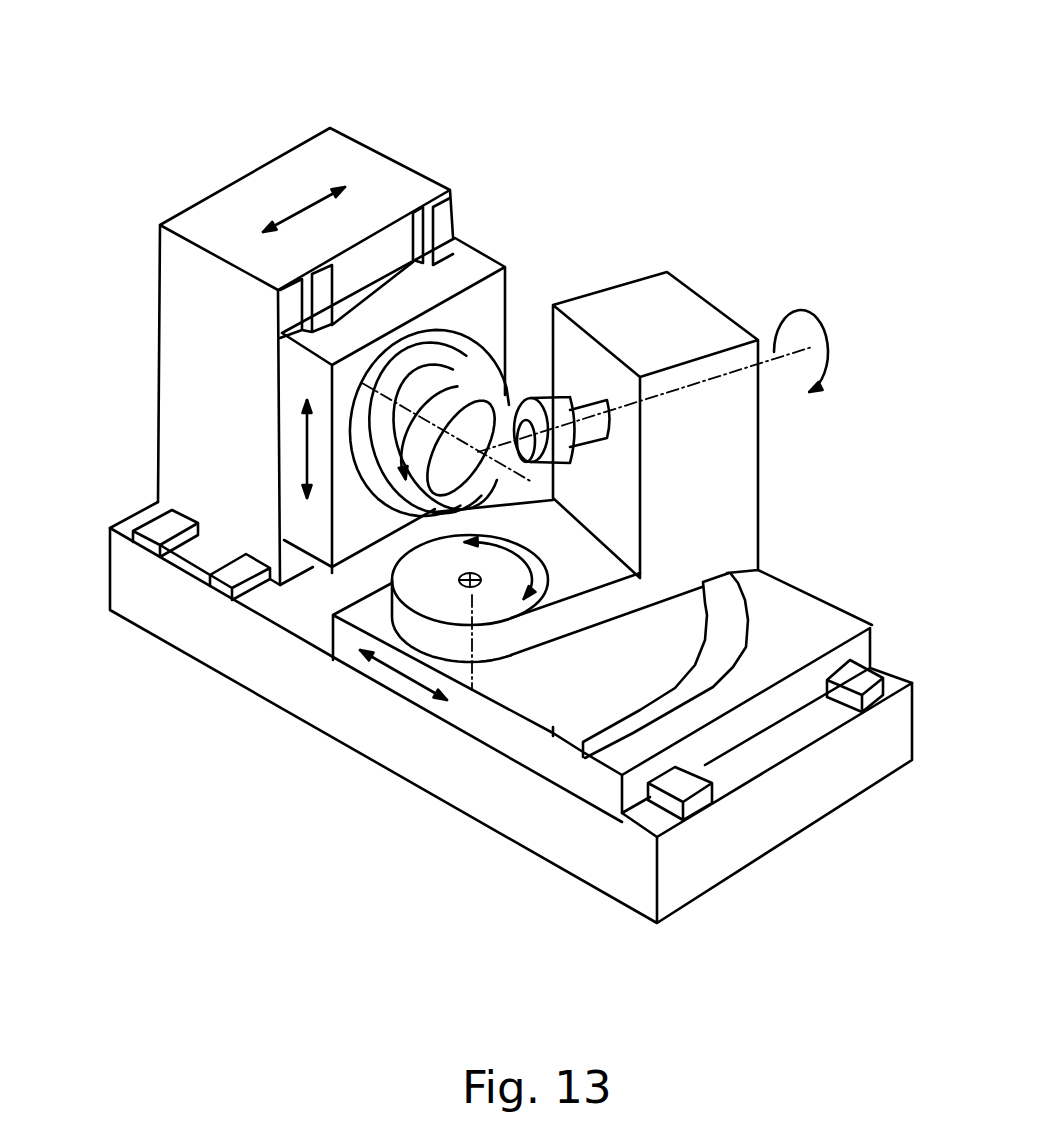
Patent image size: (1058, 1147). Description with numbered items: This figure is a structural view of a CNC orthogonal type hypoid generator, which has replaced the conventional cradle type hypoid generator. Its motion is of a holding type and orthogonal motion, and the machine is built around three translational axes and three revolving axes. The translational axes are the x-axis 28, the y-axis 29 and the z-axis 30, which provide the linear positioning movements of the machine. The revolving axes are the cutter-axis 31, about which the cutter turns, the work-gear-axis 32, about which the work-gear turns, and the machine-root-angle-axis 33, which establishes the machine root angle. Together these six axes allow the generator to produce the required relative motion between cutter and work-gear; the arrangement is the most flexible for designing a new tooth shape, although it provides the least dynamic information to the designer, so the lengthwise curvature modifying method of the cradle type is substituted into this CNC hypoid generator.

The x-axis 28 is at (288, 193).
The y-axis 29 is at (292, 445).
The z-axis 30 is at (453, 712).
The cutter-axis 31 is at (462, 340).
The work-gear-axis 32 is at (772, 340).
The machine-root-angle-axis 33 is at (547, 555).